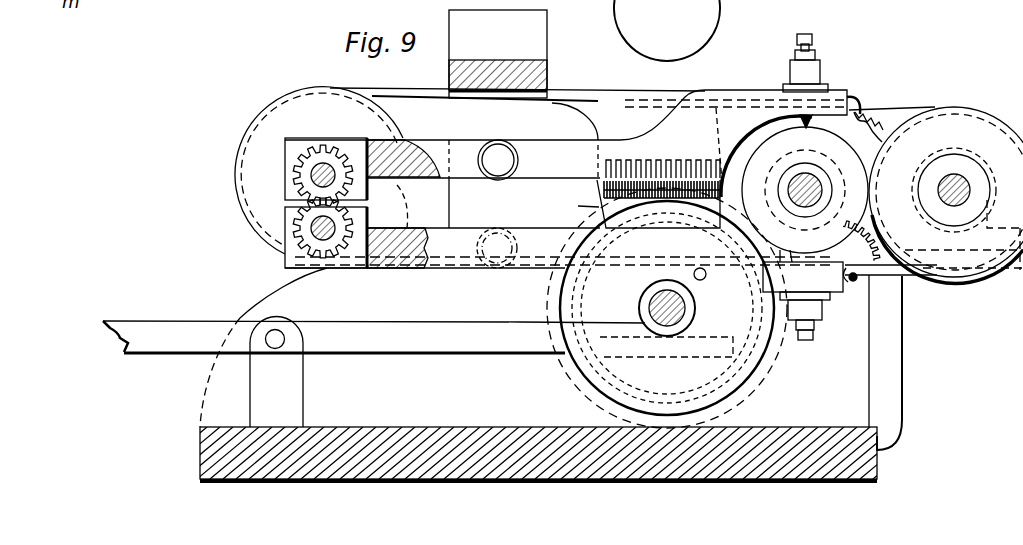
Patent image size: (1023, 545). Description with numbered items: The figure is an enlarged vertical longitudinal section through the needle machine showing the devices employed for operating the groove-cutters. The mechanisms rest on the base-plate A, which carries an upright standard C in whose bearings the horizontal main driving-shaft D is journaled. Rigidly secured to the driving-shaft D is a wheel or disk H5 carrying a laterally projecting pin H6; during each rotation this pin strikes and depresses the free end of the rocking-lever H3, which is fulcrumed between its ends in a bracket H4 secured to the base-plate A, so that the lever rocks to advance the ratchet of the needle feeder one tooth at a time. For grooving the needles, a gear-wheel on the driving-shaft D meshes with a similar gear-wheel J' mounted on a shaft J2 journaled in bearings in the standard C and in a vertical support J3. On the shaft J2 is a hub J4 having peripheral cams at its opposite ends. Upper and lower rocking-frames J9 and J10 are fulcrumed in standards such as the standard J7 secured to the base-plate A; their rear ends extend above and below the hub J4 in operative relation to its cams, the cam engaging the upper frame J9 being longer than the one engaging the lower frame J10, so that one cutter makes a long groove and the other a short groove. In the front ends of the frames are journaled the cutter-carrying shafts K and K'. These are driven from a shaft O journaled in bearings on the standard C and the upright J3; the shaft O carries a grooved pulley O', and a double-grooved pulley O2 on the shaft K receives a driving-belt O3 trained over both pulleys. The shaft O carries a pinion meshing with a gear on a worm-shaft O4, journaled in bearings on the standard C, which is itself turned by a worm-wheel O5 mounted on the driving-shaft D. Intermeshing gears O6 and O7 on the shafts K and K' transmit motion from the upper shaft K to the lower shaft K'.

The base-plate A is at (507, 444).
The upright standard C is at (931, 325).
The main driving-shaft D is at (686, 318).
The rocking-lever H3 is at (418, 339).
The bracket H4 is at (263, 347).
The wheel or disk H5 is at (667, 308).
The laterally projecting pin H6 is at (699, 268).
The gear-wheel J' is at (891, 106).
The shaft J2 is at (813, 197).
The vertical support J3 is at (880, 251).
The hub J4 is at (794, 184).
The standard J7 is at (549, 120).
The upper rocking-frame J9 is at (690, 100).
The lower rocking-frame J10 is at (838, 290).
The cutter-carrying shaft K is at (323, 156).
The cutter-carrying shaft K' is at (307, 228).
The shaft O is at (954, 182).
The grooved pulley O' is at (946, 182).
The double-grooved pulley O2 is at (320, 92).
The driving-belt O3 is at (624, 102).
The worm-shaft O4 is at (652, 176).
The worm-wheel O5 is at (577, 207).
The gear O6 is at (302, 163).
The gear O7 is at (292, 252).